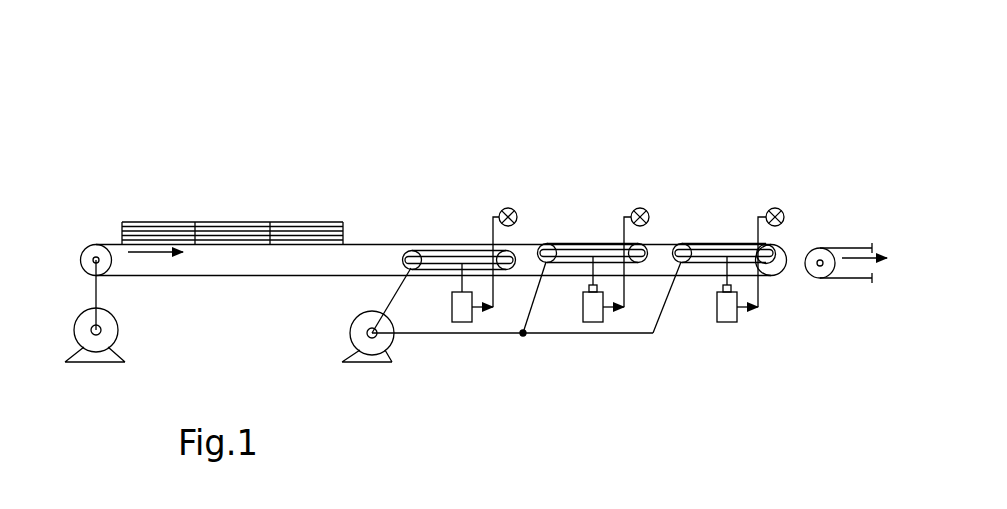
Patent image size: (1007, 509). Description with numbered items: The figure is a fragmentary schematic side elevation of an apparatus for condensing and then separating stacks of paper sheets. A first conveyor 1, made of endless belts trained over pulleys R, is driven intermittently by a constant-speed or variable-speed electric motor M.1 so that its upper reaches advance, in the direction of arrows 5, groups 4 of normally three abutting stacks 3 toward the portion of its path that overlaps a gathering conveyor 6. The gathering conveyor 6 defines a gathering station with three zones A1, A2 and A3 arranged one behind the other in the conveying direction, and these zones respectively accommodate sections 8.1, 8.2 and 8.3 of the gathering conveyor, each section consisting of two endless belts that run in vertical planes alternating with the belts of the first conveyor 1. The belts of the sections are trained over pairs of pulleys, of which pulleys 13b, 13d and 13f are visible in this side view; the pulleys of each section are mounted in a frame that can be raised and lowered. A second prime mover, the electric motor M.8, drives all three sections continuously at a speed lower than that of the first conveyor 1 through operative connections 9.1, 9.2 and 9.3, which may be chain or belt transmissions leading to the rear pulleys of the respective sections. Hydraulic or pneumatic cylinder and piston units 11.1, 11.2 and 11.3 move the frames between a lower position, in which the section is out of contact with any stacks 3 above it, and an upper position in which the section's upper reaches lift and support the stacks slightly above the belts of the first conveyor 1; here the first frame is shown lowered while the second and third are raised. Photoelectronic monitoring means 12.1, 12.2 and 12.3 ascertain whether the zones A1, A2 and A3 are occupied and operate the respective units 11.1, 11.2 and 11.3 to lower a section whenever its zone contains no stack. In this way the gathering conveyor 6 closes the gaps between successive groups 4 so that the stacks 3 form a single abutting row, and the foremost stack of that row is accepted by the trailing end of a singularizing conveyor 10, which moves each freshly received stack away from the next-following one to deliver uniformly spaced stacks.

The first conveyor 1 is at (300, 285).
The pulleys R is at (91, 245).
The electric motor M.1 is at (98, 356).
The stacks 3 is at (283, 229).
The groups 4 is at (165, 218).
The arrows 5 is at (146, 255).
The gathering conveyor 6 is at (567, 116).
The first zone of gathering station A1 is at (463, 216).
The second zone of gathering station A2 is at (593, 199).
The third zone of gathering station A3 is at (727, 204).
The second prime mover means M.8 is at (373, 357).
The first section of gathering conveyor 8.1 is at (428, 283).
The second section of gathering conveyor 8.2 is at (562, 283).
The third section of gathering conveyor 8.3 is at (698, 285).
The operative connection 9.1 is at (396, 292).
The operative connection 9.2 is at (523, 334).
The operative connection 9.3 is at (665, 295).
The singularizing conveyor 10 is at (848, 240).
The cylinder and piston unit 11.1 is at (462, 322).
The cylinder and piston unit 11.2 is at (593, 322).
The cylinder and piston unit 11.3 is at (727, 322).
The monitoring means 12.1 is at (508, 208).
The monitoring means 12.2 is at (640, 208).
The monitoring means 12.3 is at (777, 208).
The pulleys 13b is at (402, 244).
The pulleys 13d is at (544, 244).
The pulleys 13f is at (681, 244).